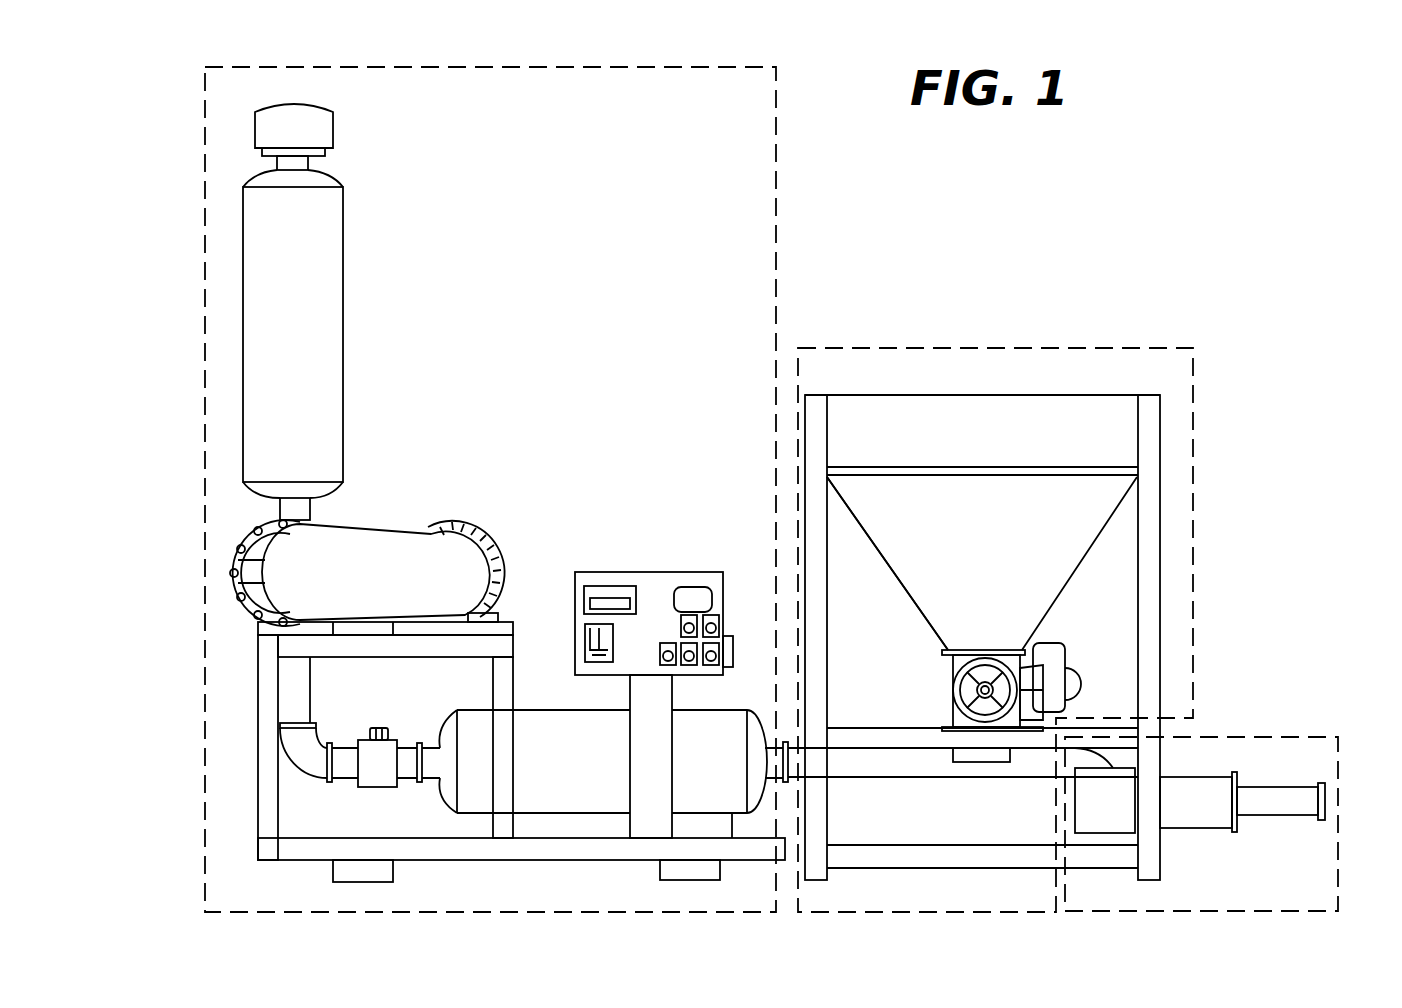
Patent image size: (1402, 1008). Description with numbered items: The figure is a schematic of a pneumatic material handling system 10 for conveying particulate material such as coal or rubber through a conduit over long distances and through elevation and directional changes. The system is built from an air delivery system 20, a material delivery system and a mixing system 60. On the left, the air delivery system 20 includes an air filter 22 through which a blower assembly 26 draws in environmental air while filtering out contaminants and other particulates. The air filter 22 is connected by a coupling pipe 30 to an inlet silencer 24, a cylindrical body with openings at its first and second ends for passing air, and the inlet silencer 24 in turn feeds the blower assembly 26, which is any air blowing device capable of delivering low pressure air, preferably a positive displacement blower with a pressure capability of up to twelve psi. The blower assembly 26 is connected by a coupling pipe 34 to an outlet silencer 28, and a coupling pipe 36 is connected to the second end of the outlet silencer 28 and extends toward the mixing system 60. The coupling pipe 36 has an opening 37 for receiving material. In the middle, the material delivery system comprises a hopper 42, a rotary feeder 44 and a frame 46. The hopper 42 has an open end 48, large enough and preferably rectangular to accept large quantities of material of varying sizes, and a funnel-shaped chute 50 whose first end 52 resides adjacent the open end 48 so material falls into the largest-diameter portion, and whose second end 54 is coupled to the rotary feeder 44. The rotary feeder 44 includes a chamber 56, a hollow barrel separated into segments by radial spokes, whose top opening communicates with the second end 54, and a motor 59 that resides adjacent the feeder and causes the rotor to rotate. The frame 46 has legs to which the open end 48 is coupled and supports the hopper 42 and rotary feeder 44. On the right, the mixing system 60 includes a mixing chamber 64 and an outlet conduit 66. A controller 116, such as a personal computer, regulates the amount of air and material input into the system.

The pneumatic material handling system 10 is at (1020, 232).
The air delivery system 20 is at (776, 270).
The air filter 22 is at (334, 128).
The inlet silencer 24 is at (333, 262).
The blower assembly 26 is at (245, 537).
The outlet silencer 28 is at (553, 815).
The coupling pipe 30 is at (300, 162).
The coupling pipe 34 is at (300, 750).
The coupling pipe 36 is at (845, 760).
The opening 37 is at (975, 762).
The hopper 42 is at (1097, 533).
The rotary feeder 44 is at (955, 683).
The frame 46 is at (1145, 433).
The open end 48 is at (1045, 425).
The chute 50 is at (925, 568).
The first end 52 is at (1103, 485).
The second end 54 is at (965, 633).
The chamber 56 is at (948, 707).
The motor 59 is at (1059, 663).
The mixing system 60 is at (1310, 737).
The mixing chamber 64 is at (1207, 790).
The outlet conduit 66 is at (1270, 808).
The controller 116 is at (604, 572).